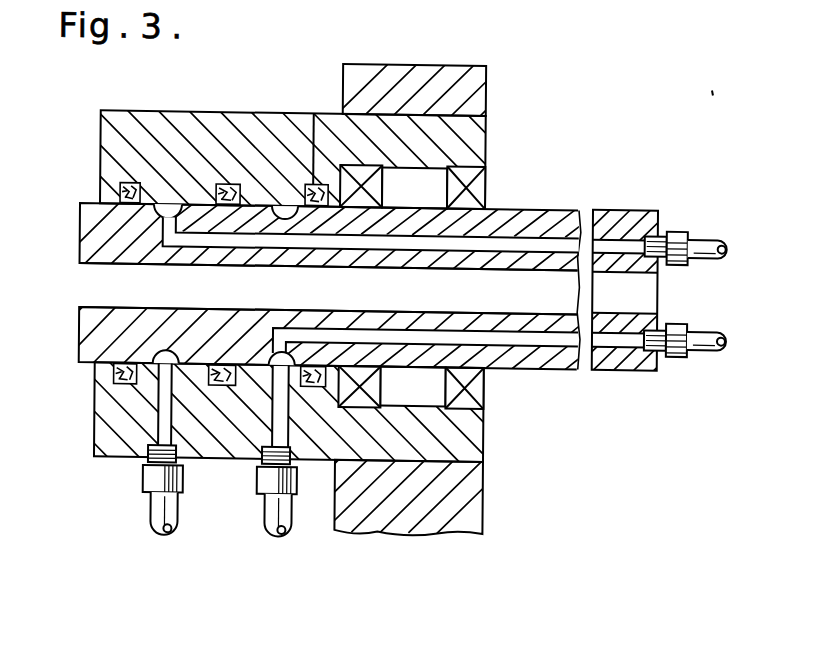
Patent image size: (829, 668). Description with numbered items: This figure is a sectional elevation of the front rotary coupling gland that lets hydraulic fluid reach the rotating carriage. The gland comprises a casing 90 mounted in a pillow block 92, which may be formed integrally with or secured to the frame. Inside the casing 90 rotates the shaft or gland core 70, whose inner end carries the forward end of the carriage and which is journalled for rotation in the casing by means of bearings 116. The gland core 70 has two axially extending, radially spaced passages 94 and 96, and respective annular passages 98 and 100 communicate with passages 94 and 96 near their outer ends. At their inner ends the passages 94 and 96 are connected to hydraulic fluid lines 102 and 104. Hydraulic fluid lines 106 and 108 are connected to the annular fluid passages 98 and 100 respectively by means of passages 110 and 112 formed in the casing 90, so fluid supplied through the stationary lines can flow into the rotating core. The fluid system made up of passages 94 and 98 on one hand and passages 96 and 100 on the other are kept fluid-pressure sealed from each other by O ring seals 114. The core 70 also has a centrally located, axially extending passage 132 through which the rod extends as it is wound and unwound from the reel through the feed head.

The gland core 70 is at (621, 203).
The casing 90 is at (200, 112).
The pillow block 92 is at (487, 83).
The axially extending passage 94 is at (540, 230).
The axially extending passage 96 is at (518, 333).
The annular passage 98 is at (171, 352).
The annular passage 100 is at (279, 351).
The hydraulic fluid line 102 is at (698, 236).
The hydraulic fluid line 104 is at (698, 330).
The hydraulic fluid line 106 is at (153, 512).
The hydraulic fluid line 108 is at (270, 509).
The passage 110 is at (162, 407).
The passage 112 is at (280, 417).
The O ring seal 114 is at (118, 189).
The bearing 116 is at (442, 185).
The centrally located axially extending passage 132 is at (112, 306).